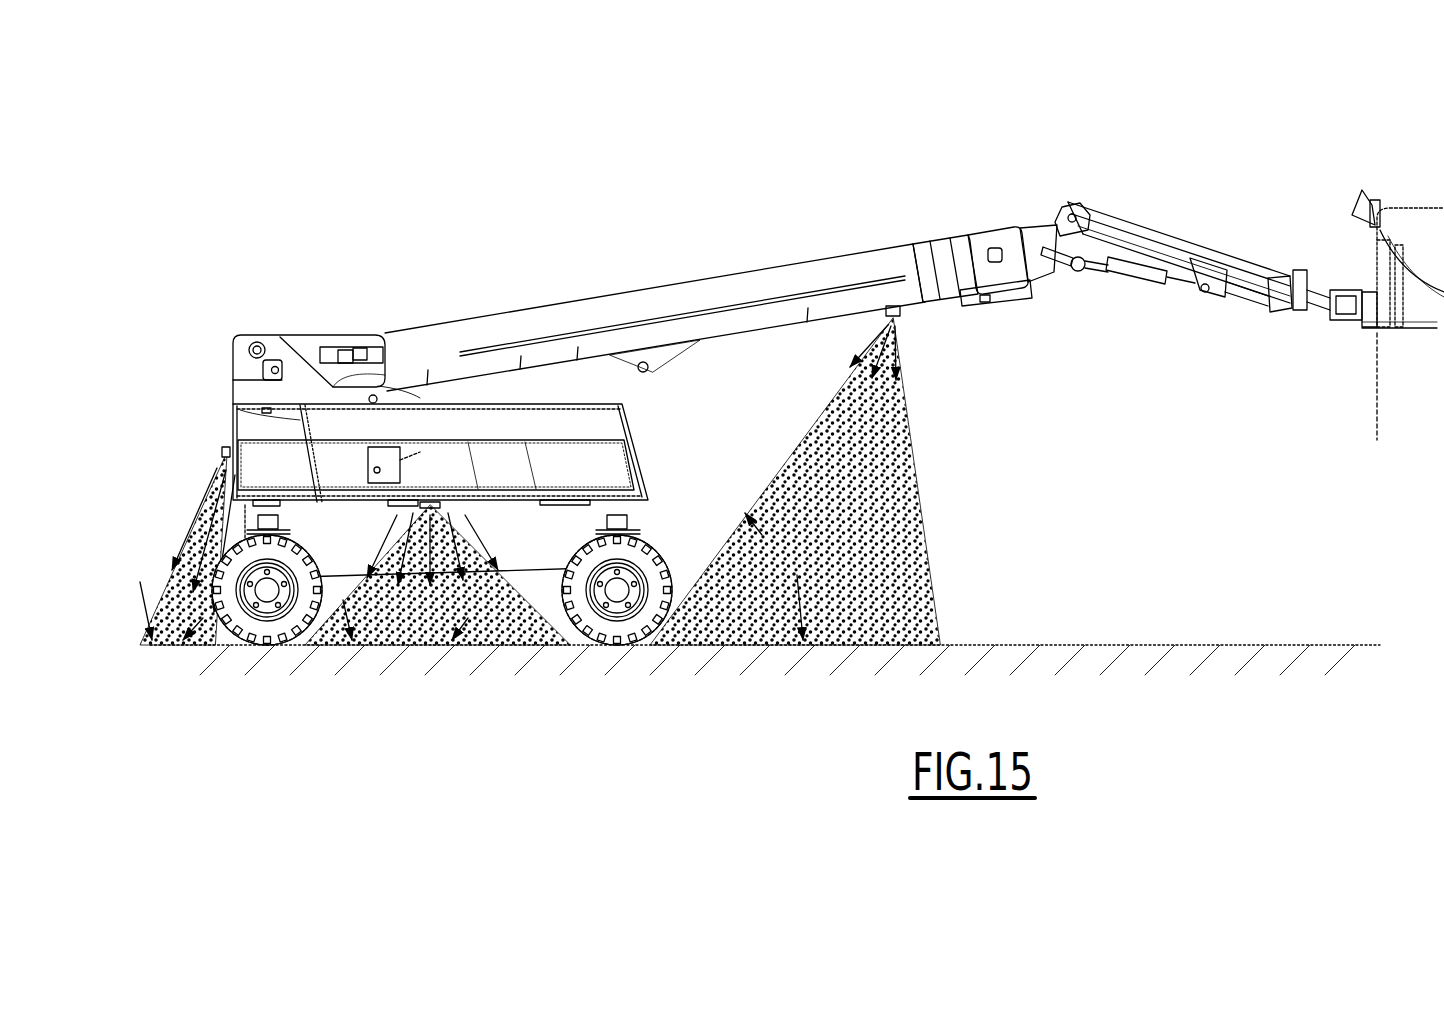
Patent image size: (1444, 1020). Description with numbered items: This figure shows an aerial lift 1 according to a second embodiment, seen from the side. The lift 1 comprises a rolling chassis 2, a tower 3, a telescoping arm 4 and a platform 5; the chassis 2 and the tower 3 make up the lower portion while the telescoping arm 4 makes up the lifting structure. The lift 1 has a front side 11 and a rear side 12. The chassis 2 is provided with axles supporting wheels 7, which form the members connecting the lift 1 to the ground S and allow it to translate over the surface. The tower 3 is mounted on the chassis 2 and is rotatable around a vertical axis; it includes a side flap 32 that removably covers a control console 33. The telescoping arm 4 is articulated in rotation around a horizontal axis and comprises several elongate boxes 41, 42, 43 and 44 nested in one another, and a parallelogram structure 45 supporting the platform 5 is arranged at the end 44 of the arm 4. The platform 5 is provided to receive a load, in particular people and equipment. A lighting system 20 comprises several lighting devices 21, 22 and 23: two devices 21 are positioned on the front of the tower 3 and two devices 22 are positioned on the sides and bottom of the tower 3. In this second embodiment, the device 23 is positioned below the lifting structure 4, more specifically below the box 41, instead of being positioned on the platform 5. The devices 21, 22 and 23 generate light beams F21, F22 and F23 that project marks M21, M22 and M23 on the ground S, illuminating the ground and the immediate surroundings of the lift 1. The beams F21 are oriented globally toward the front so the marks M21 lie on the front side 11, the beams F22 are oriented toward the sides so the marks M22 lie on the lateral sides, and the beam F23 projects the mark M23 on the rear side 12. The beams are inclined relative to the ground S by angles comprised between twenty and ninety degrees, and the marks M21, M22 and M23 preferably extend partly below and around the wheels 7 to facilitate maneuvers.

The lift 1 is at (755, 354).
The rolling chassis 2 is at (462, 439).
The tower 3 is at (550, 475).
The telescoping arm 4 is at (857, 227).
The platform 5 is at (1340, 160).
The wheels 7 is at (648, 555).
The front side 11 is at (188, 380).
The rear side 12 is at (705, 434).
The lighting system 20 is at (228, 334).
The lighting device 21 is at (228, 452).
The lighting device 22 is at (470, 478).
The lighting device 23 is at (897, 320).
The side flap 32 is at (400, 460).
The control console 33 is at (366, 470).
The elongate box 41 is at (655, 317).
The elongate box 42 is at (945, 268).
The elongate box 43 is at (996, 266).
The elongate box 44 is at (1055, 242).
The parallelogram structure 45 is at (1199, 257).
The light beams F21 is at (187, 546).
The light beams F22 is at (437, 575).
The light beams F23 is at (795, 481).
The marks M21 is at (224, 590).
The marks M22 is at (470, 592).
The mark M23 is at (892, 640).
The ground S is at (1263, 640).